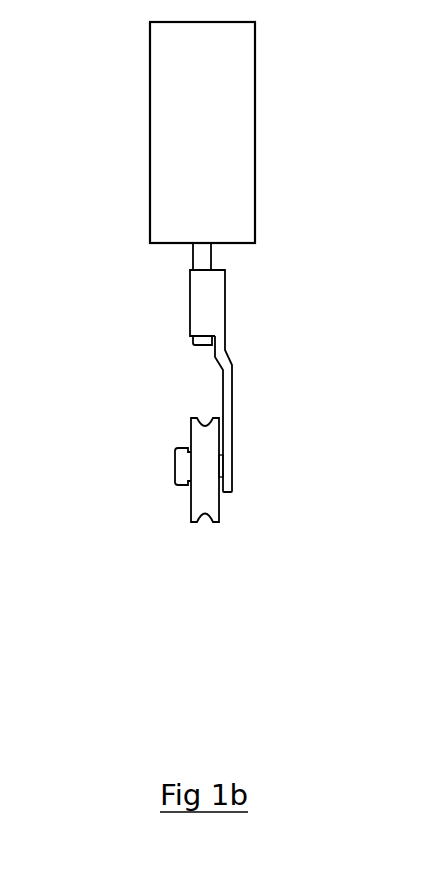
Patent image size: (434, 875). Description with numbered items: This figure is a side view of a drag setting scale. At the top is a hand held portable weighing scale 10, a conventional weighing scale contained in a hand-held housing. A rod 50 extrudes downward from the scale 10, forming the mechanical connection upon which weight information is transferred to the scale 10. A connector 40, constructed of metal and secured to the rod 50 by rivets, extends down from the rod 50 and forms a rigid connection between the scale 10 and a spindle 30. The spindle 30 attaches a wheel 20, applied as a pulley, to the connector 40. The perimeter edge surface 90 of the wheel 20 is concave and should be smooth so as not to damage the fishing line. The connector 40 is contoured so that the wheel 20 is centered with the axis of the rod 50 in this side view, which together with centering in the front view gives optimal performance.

The hand held portable weighing scale 10 is at (125, 142).
The wheel 20 is at (178, 430).
The spindle 30 is at (167, 470).
The connector 40 is at (245, 389).
The rod 50 is at (193, 260).
The perimeter edge surface 90 is at (218, 533).